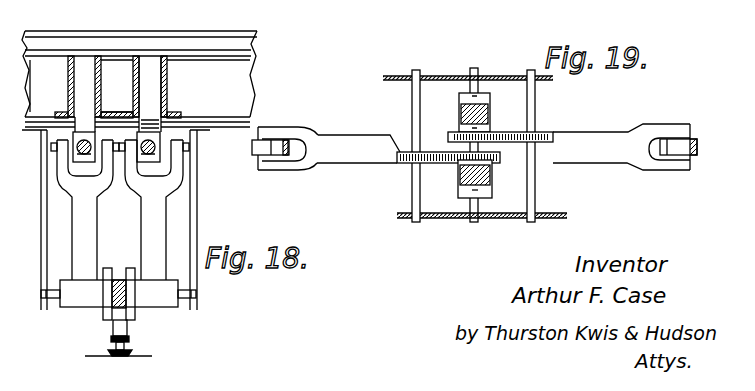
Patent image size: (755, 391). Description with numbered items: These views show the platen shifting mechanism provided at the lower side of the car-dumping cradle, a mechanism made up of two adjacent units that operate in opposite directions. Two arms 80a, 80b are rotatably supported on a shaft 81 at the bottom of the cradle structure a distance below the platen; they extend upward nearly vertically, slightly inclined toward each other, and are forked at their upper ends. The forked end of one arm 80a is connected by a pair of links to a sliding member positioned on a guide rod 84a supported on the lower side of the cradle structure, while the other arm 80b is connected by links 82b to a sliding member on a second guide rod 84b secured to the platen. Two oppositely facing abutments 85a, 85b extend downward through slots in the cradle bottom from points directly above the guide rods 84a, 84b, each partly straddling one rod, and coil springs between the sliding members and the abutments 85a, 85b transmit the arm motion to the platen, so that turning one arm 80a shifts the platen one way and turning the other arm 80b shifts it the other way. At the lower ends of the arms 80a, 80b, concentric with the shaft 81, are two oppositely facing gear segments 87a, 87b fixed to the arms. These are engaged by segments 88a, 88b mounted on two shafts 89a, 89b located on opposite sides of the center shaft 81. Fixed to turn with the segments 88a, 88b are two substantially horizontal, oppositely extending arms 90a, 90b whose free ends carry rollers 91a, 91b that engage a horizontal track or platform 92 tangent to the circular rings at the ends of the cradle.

In FIG. 18, the guide rod 84a is at (61, 113).
In FIG. 18, the second guide rod 84b is at (175, 118).
In FIG. 18, the abutment 85a is at (83, 88).
In FIG. 18, the abutment 85b is at (153, 80).
In FIG. 18, the arm 80a is at (73, 203).
In FIG. 19, the arm 80a is at (489, 186).
In FIG. 18, the arm 80b is at (153, 189).
In FIG. 19, the arm 80b is at (489, 112).
In FIG. 18, the links 82b is at (112, 172).
In FIG. 18, the shaft 81 is at (194, 300).
In FIG. 18, the segment 88b is at (127, 276).
In FIG. 19, the segment 88b is at (492, 142).
In FIG. 19, the segment 88a is at (448, 177).
In FIG. 19, the gear segment 87a is at (437, 178).
In FIG. 19, the gear segment 87b is at (494, 122).
In FIG. 19, the shaft 89a is at (412, 180).
In FIG. 19, the shaft 89b is at (536, 193).
In FIG. 19, the arm 90a is at (345, 138).
In FIG. 18, the arm 90b is at (128, 302).
In FIG. 19, the arm 90b is at (603, 115).
In FIG. 18, the roller 91a is at (110, 327).
In FIG. 19, the roller 91a is at (283, 150).
In FIG. 19, the roller 91b is at (673, 150).
In FIG. 18, the track or platform 92 is at (110, 348).